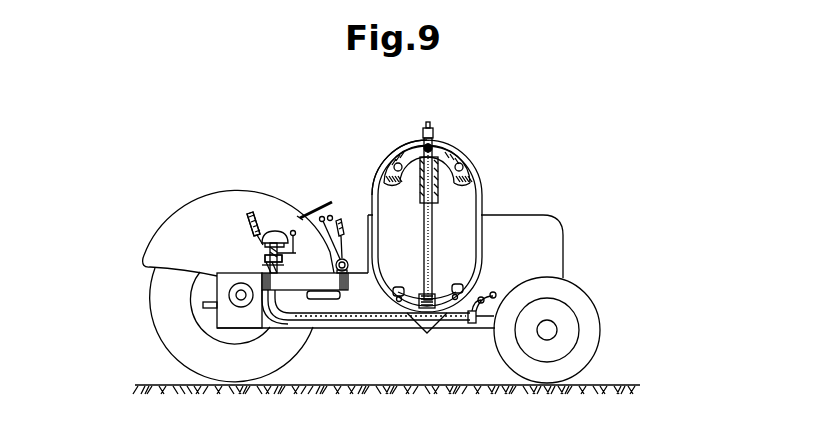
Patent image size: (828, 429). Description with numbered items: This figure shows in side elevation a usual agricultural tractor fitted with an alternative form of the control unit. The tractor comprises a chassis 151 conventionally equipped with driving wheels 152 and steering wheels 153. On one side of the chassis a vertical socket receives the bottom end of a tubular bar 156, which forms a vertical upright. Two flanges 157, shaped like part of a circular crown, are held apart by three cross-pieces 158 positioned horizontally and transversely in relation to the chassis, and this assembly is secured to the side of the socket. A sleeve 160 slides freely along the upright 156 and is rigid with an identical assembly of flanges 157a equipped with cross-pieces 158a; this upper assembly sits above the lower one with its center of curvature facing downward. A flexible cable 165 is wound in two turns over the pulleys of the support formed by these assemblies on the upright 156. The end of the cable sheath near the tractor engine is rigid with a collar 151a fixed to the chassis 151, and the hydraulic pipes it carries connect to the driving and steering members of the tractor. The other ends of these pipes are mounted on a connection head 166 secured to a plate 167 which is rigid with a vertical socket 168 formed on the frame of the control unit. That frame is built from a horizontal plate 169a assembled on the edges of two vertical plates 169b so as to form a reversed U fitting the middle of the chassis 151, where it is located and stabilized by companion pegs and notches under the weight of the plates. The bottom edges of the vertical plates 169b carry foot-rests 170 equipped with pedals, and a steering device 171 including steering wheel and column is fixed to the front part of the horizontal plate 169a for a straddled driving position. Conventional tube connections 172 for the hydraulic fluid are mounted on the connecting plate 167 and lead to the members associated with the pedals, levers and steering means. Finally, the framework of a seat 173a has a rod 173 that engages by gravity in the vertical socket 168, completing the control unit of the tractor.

The chassis 151 is at (222, 320).
The collar 151a is at (472, 324).
The driving wheels 152 is at (158, 318).
The steering wheels 153 is at (575, 297).
The tubular bar 156 is at (432, 237).
The flanges 157 is at (400, 289).
The flanges 157a is at (377, 192).
The cross-pieces 158 is at (427, 325).
The cross-pieces 158a is at (422, 152).
The sleeve 160 is at (420, 190).
The flexible cable 165 is at (483, 185).
The connection head 166 is at (253, 251).
The plate 167 is at (331, 282).
The vertical socket 168 is at (260, 240).
The horizontal plate 169a is at (309, 239).
The vertical plates 169b is at (258, 314).
The foot-rests 170 is at (332, 293).
The steering device 171 is at (350, 257).
The tube connections 172 is at (262, 259).
The rod 173 is at (277, 231).
The seat framework 173a is at (262, 208).